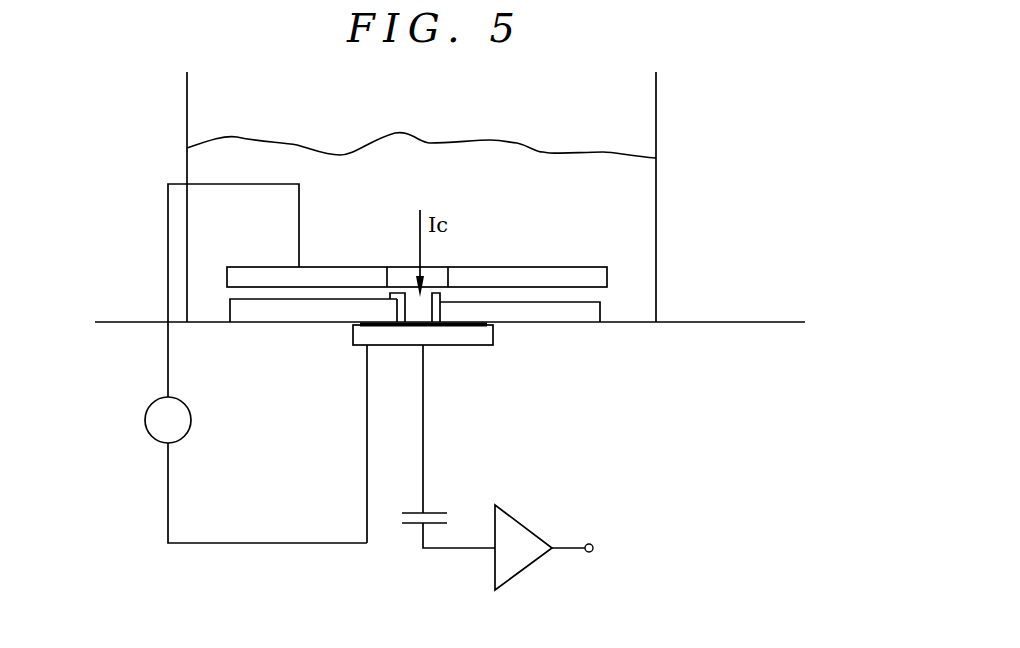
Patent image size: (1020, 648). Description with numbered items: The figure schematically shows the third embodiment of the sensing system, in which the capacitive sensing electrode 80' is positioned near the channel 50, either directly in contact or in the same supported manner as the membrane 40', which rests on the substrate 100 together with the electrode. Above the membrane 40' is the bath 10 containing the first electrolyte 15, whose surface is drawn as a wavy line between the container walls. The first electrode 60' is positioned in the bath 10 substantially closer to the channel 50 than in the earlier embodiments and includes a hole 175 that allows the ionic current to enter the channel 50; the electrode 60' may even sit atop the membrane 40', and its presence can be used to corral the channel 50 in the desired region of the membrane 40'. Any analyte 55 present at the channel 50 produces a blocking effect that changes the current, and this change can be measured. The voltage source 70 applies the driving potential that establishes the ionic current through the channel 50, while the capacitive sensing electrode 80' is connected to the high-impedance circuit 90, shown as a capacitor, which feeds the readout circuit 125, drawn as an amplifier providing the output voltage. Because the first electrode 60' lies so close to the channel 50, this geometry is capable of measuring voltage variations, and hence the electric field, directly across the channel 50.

The bath 10 is at (172, 146).
The first electrolyte 15 is at (638, 191).
The substrate 100 is at (632, 322).
The first electrode 60' is at (417, 262).
The membrane 40' is at (422, 332).
The hole 175 is at (385, 277).
The analyte 55 is at (410, 297).
The channel 50 is at (437, 295).
The capacitive sensing electrode 80' is at (436, 433).
The voltage source 70 is at (152, 403).
The high-impedance circuit 90 is at (435, 552).
The readout circuit 125 is at (528, 567).